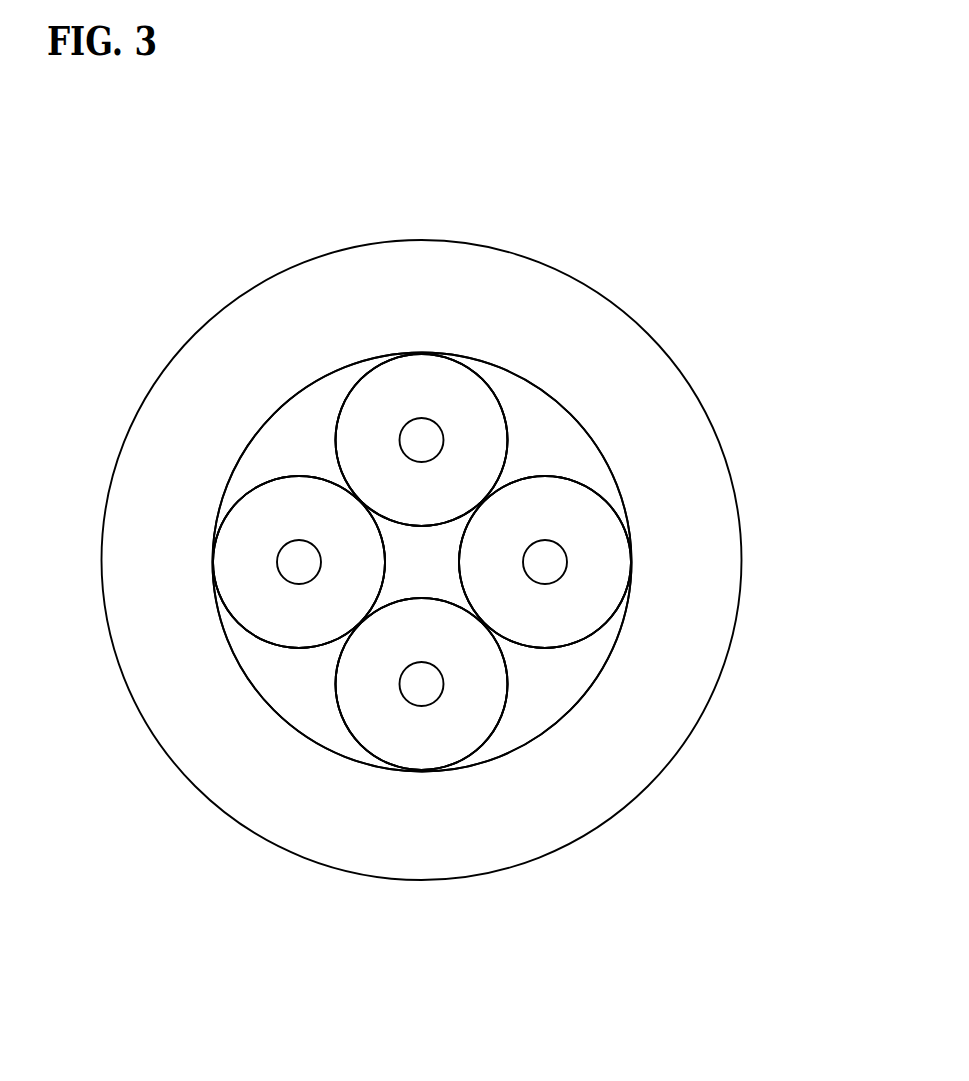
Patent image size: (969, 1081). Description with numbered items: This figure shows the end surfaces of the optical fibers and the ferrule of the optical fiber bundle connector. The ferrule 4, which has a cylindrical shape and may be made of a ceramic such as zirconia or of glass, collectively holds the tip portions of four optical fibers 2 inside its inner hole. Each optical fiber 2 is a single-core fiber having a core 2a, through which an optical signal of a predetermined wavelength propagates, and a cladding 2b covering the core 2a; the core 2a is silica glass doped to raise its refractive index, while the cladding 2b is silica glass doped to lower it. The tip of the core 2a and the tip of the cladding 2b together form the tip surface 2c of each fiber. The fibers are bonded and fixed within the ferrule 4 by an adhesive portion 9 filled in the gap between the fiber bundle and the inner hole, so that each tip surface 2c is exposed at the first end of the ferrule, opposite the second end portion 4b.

The optical fiber 2 is at (267, 643).
The core 2a is at (435, 421).
The cladding 2b is at (483, 420).
The tip surface 2c is at (477, 473).
The ferrule 4 is at (553, 268).
The end portion 4b is at (712, 495).
The adhesive portion 9 is at (293, 688).